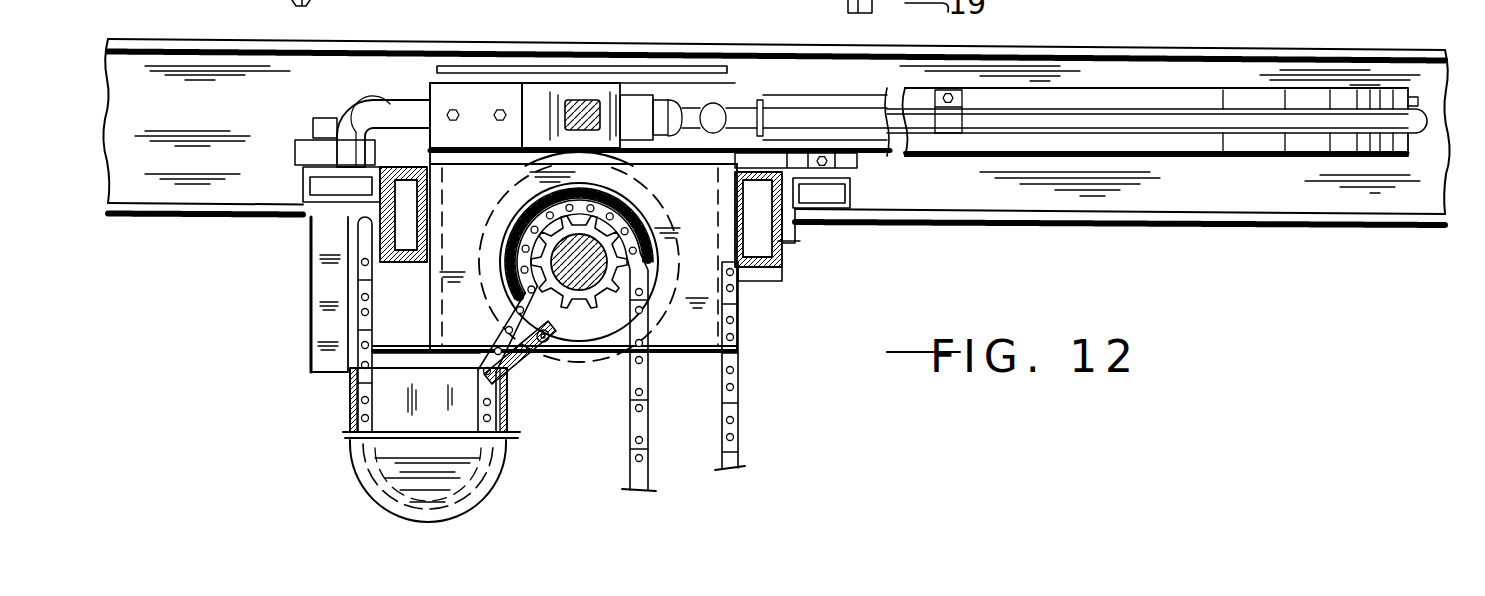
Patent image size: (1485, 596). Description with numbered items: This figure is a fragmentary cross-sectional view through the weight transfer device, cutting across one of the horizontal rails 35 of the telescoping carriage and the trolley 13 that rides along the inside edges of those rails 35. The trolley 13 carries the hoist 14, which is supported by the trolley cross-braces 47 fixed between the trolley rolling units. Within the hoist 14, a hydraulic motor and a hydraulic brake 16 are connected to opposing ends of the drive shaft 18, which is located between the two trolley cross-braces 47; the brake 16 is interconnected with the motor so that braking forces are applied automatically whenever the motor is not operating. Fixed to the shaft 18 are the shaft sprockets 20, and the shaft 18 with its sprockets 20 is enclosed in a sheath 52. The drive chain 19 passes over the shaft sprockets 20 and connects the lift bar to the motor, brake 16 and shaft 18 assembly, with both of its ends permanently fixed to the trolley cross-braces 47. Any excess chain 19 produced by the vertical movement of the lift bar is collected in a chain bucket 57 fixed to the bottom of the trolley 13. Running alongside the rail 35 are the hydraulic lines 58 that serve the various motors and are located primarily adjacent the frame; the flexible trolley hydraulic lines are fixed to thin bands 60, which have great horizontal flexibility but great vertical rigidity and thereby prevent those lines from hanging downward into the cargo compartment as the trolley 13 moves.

The trolley 13 is at (800, 238).
The hoist 14 is at (745, 298).
The hydraulic brake 16 is at (587, 353).
The drive shaft 18 is at (617, 213).
The drive chain 19 is at (738, 388).
The shaft sprockets 20 is at (525, 222).
The rails 35 is at (1262, 192).
The trolley cross-braces 47 is at (383, 233).
The sheath 52 is at (683, 336).
The chain bucket 57 is at (350, 463).
The hydraulic lines 58 is at (1188, 107).
The thin bands 60 is at (1096, 88).